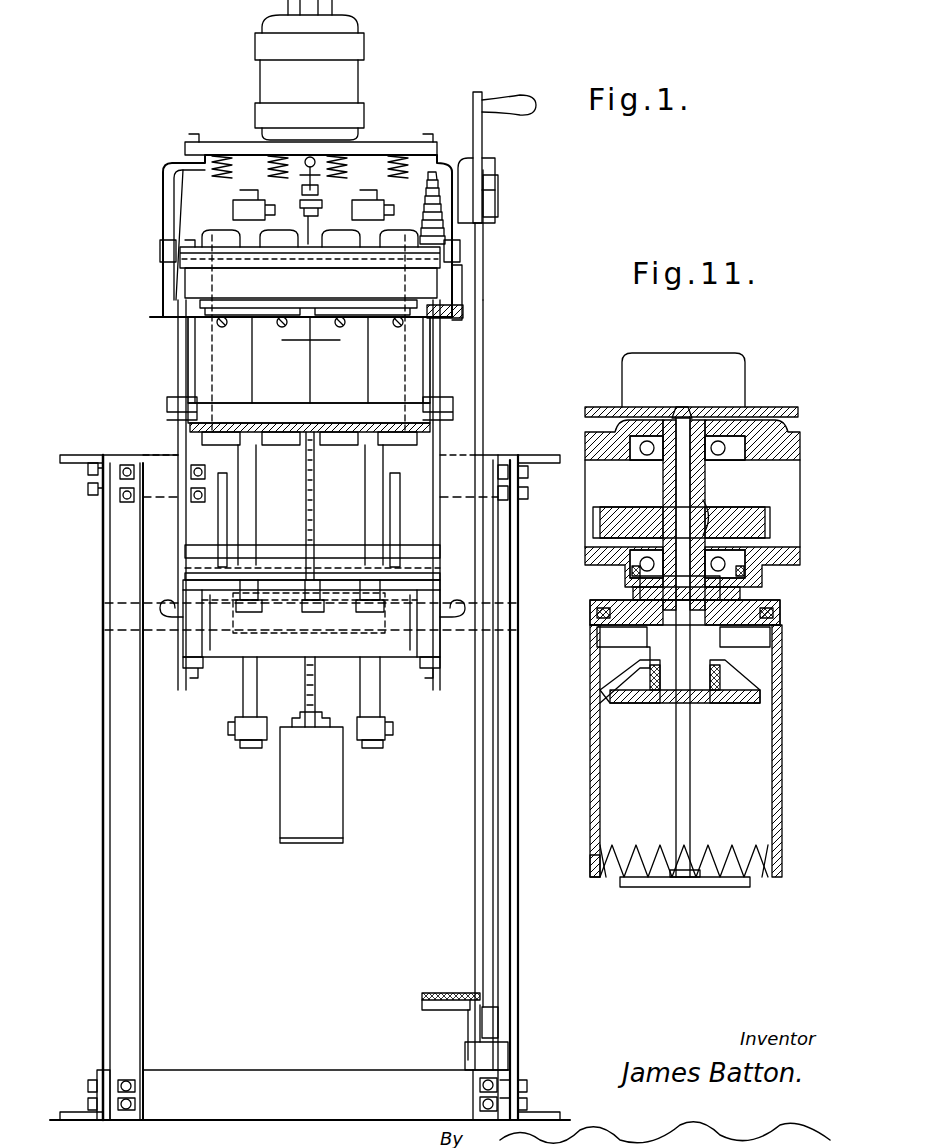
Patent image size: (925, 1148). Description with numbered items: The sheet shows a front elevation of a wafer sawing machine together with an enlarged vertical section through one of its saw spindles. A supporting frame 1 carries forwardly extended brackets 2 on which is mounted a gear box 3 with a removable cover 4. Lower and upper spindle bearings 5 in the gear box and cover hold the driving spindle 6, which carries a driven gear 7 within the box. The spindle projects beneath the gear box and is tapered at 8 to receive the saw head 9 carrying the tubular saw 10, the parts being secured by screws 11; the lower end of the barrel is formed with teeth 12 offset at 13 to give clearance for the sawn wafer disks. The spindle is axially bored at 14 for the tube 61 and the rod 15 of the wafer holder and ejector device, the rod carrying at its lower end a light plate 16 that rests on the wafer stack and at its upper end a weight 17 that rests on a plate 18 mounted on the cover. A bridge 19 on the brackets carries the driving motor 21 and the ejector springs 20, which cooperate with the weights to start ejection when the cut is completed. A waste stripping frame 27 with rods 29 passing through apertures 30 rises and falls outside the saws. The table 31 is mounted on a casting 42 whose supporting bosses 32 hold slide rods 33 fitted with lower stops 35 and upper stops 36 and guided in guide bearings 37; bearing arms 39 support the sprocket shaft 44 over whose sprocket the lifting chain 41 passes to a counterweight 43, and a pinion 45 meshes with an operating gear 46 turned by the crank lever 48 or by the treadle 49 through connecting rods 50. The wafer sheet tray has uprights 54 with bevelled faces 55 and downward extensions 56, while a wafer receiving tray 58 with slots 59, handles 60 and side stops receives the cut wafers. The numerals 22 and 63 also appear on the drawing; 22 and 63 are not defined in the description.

In FIG. 1, the supporting frame 1 is at (100, 460).
In FIG. 1, the brackets 2 is at (165, 288).
In FIG. 1, the gear box 3 is at (535, 168).
In FIG. 11, the gear box 3 is at (785, 530).
In FIG. 1, the removable cover 4 is at (182, 265).
In FIG. 11, the removable cover 4 is at (800, 440).
In FIG. 11, the spindle bearings 5 is at (742, 430).
In FIG. 11, the driving spindle 6 is at (710, 486).
In FIG. 11, the driven gears 7 is at (760, 512).
In FIG. 11, the tapered lower end 8 is at (725, 636).
In FIG. 11, the saw head 9 is at (740, 650).
In FIG. 1, the tubular saw 10 is at (205, 365).
In FIG. 11, the tubular saw 10 is at (782, 748).
In FIG. 1, the screws 11 is at (338, 327).
In FIG. 11, the screws 11 is at (782, 612).
In FIG. 1, the teeth 12 is at (190, 425).
In FIG. 11, the teeth 12 is at (775, 848).
In FIG. 11, the offset 13 is at (598, 877).
In FIG. 11, the axial bore 14 is at (640, 590).
In FIG. 11, the rod 15 is at (695, 796).
In FIG. 1, the plate or disk 16 is at (295, 445).
In FIG. 11, the plate or disk 16 is at (700, 887).
In FIG. 1, the weight 17 is at (262, 232).
In FIG. 11, the weight 17 is at (735, 378).
In FIG. 1, the plate 18 is at (180, 248).
In FIG. 11, the plate 18 is at (608, 407).
In FIG. 1, the bridge 19 is at (238, 144).
In FIG. 1, the ejector springs 20 is at (355, 152).
In FIG. 1, the driving motor 21 is at (345, 77).
In FIG. 1, the block 22 is at (300, 262).
In FIG. 1, the waste stripping frame 27 is at (335, 410).
In FIG. 1, the rods 29 is at (180, 345).
In FIG. 1, the apertures 30 is at (465, 312).
In FIG. 1, the table 31 is at (330, 572).
In FIG. 1, the supporting bosses 32 is at (258, 590).
In FIG. 1, the slide rods 33 is at (248, 698).
In FIG. 1, the lower stops 35 is at (245, 748).
In FIG. 1, the upper stops 36 is at (420, 160).
In FIG. 1, the guide bearings 37 is at (322, 670).
In FIG. 1, the bearing arms 39 is at (345, 262).
In FIG. 1, the lifting chain 41 is at (316, 503).
In FIG. 1, the casting 42 is at (420, 585).
In FIG. 1, the counterweight 43 is at (292, 788).
In FIG. 1, the sprocket shaft 44 is at (430, 195).
In FIG. 1, the pinion 45 is at (465, 182).
In FIG. 1, the operating gear 46 is at (498, 205).
In FIG. 1, the crank lever 48 is at (520, 95).
In FIG. 1, the treadle 49 is at (428, 993).
In FIG. 1, the connecting rods 50 is at (488, 840).
In FIG. 1, the uprights 54 is at (218, 508).
In FIG. 1, the bevelled faces 55 is at (440, 483).
In FIG. 1, the downward extensions 56 is at (185, 560).
In FIG. 1, the wafer receiving tray 58 is at (255, 640).
In FIG. 1, the slots 59 is at (200, 645).
In FIG. 1, the handles 60 is at (165, 622).
In FIG. 1, the tube 61 is at (185, 680).
In FIG. 11, the tube 61 is at (670, 475).
In FIG. 11, the collar 63 is at (679, 398).